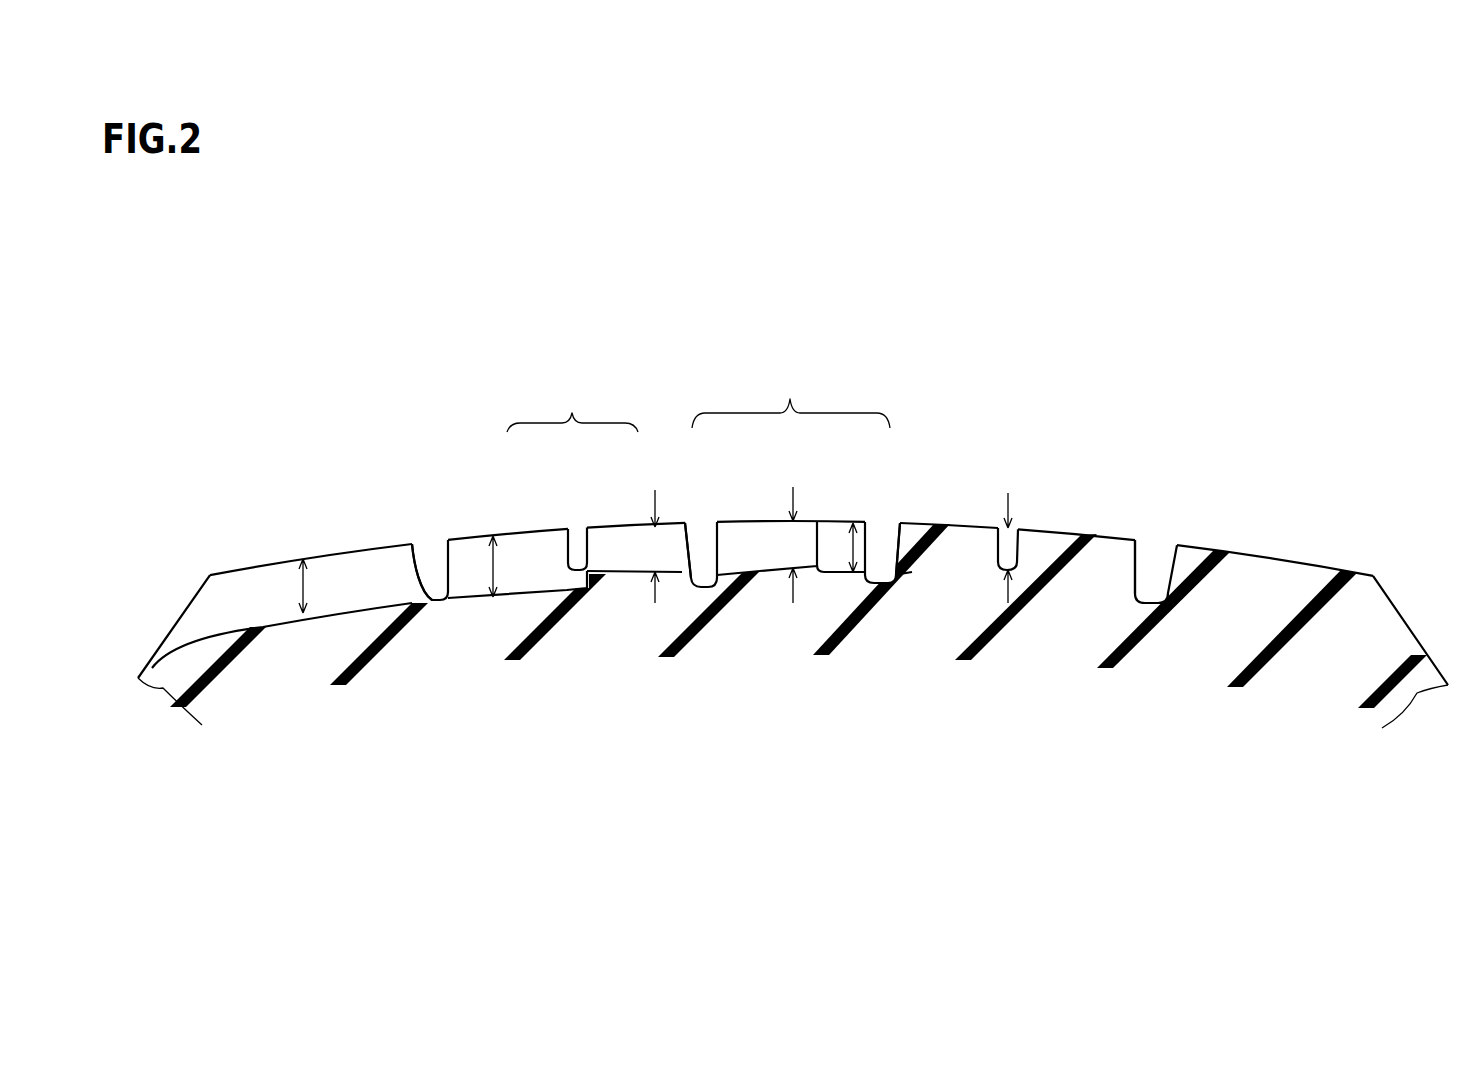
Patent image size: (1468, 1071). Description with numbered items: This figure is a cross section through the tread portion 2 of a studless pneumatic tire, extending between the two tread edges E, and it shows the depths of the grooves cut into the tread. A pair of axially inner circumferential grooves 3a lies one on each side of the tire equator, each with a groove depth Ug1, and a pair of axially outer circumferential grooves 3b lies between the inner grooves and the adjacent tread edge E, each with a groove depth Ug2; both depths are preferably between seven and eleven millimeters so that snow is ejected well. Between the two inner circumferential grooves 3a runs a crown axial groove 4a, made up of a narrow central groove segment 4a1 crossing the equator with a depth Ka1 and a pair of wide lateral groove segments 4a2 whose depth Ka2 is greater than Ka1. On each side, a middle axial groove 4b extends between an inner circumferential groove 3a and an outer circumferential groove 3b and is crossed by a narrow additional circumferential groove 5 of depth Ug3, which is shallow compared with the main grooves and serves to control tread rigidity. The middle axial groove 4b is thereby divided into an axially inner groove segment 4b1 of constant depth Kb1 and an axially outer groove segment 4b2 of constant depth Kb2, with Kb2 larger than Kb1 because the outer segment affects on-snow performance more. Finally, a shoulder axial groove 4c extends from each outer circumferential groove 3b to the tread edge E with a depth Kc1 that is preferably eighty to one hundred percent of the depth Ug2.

The tread portion 2 is at (1282, 371).
The axially inner circumferential groove 3a is at (687, 523).
The axially outer circumferential groove 3b is at (416, 540).
The crown axial groove 4a is at (791, 398).
The narrow central groove segment 4a1 is at (807, 568).
The wide lateral groove segment 4a2 is at (750, 572).
The middle axial groove 4b is at (572, 406).
The axially inner groove segment 4b1 is at (622, 571).
The axially outer groove segment 4b2 is at (537, 590).
The shoulder axial groove 4c is at (370, 607).
The additional circumferential groove 5 is at (1002, 525).
The tread edge E is at (210, 575).
The groove depth of narrow central groove segment Ka1 is at (793, 542).
The groove depth of wide groove segment Ka2 is at (855, 548).
The groove depth of inner groove segment Kb1 is at (655, 545).
The groove depth of outer groove segment Kb2 is at (493, 563).
The depth of shoulder axial groove Kc1 is at (303, 590).
The groove depth of inner circumferential groove Ug1 is at (702, 524).
The groove depth of outer circumferential groove Ug2 is at (430, 539).
The groove depth of additional circumferential groove Ug3 is at (1007, 550).